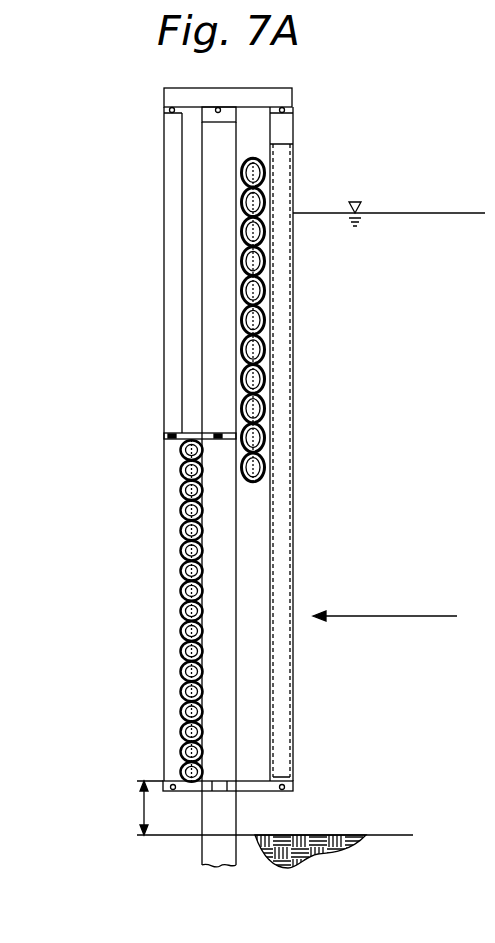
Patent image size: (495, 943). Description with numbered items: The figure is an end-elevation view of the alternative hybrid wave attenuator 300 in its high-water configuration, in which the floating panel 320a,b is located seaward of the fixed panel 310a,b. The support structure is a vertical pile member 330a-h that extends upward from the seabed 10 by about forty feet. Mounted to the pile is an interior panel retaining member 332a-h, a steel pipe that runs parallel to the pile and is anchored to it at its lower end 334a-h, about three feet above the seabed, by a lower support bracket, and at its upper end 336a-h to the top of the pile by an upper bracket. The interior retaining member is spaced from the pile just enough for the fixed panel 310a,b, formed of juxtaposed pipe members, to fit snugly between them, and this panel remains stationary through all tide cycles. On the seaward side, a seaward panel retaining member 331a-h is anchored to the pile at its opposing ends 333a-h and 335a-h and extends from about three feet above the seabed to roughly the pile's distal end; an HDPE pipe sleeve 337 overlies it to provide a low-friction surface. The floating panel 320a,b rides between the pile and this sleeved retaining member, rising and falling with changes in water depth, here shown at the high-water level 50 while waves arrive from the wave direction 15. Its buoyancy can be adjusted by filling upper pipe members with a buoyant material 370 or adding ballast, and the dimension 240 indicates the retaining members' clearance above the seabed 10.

The alternative wave attenuator 300 is at (327, 73).
The upper end of interior retaining member 336a-h is at (170, 110).
The upper end of seaward panel retaining member 335a-h is at (285, 110).
The pile member 330a-h is at (202, 152).
The buoyant material 370 is at (265, 165).
The mean higher high water level 50 is at (440, 213).
The interior panel retaining member 332a-h is at (163, 340).
The seaward panel retaining member 331a-h is at (293, 328).
The floating panel 320a,b is at (264, 400).
The fixed panel 310a,b is at (182, 492).
The wave direction 15 is at (432, 616).
The sleeve 337 is at (294, 757).
The lower end of interior retaining member 334a-h is at (172, 786).
The lower end of seaward panel retaining member 333a-h is at (285, 789).
The height above seabed 240 is at (143, 812).
The seabed 10 is at (383, 836).